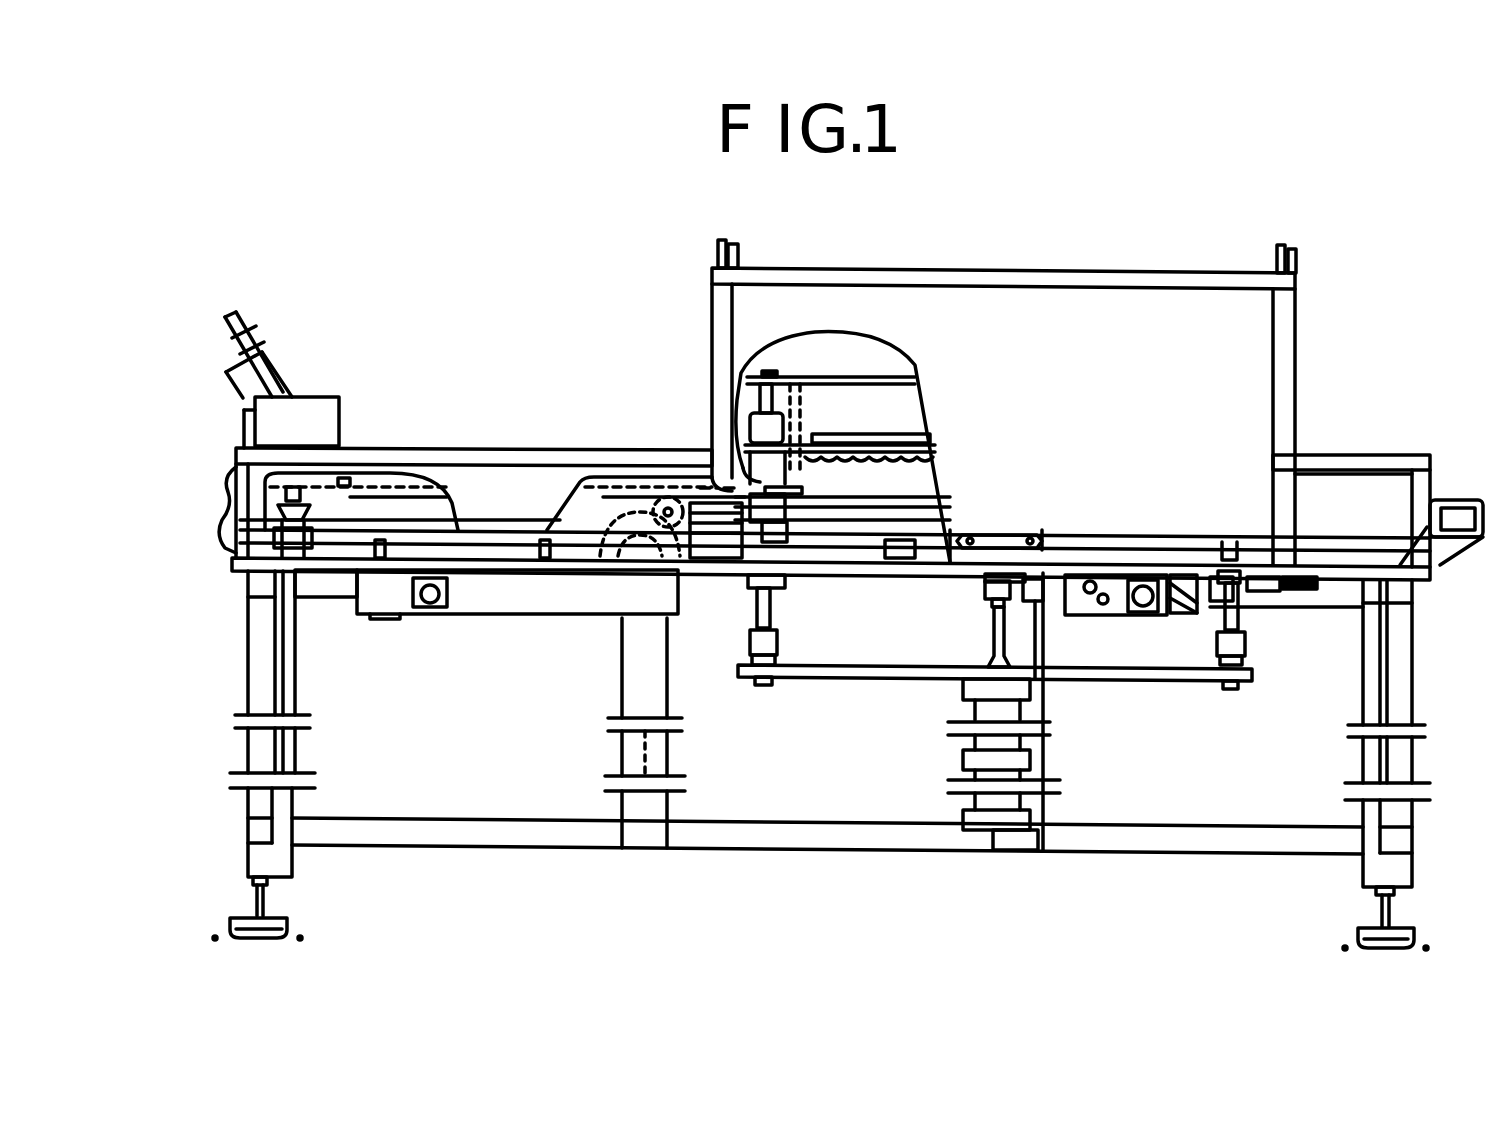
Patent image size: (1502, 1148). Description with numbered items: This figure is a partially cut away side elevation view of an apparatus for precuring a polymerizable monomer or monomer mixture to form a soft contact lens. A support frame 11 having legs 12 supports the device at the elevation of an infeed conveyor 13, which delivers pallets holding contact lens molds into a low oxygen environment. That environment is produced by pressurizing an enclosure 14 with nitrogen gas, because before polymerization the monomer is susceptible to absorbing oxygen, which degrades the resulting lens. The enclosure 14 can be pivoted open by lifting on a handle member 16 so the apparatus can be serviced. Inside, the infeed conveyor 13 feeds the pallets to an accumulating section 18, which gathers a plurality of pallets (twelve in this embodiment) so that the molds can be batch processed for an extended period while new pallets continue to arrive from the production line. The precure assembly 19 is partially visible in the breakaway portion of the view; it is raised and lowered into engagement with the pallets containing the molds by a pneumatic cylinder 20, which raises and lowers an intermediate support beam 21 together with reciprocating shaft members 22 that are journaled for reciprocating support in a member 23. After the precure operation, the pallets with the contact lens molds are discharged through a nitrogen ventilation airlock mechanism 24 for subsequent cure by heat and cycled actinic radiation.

The support frame 11 is at (538, 731).
The legs 12 is at (262, 661).
The infeed conveyor 13 is at (230, 548).
The enclosure 14 is at (1101, 416).
The handle member 16 is at (1003, 534).
The accumulating section 18 is at (497, 369).
The precure assembly 19 is at (862, 358).
The pneumatic cylinder 20 is at (960, 758).
The intermediate support beam 21 is at (902, 672).
The reciprocating shaft members 22 is at (763, 396).
The member 23 is at (757, 430).
The nitrogen ventilation airlock mechanism 24 is at (1377, 460).